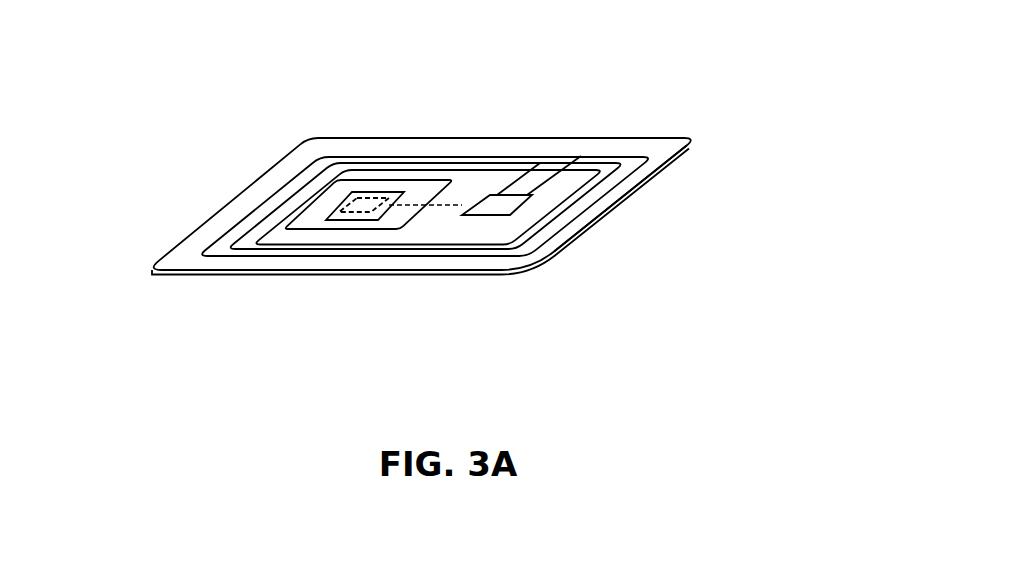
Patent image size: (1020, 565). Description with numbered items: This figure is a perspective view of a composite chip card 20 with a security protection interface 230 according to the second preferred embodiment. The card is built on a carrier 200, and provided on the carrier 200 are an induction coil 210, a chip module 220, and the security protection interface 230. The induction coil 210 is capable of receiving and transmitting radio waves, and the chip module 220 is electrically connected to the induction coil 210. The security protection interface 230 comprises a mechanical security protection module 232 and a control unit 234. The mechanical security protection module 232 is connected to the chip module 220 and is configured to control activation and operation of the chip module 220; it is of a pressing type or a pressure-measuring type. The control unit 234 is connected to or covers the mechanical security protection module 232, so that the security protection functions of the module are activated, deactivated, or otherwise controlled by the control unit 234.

The composite chip card 20 is at (715, 80).
The carrier 200 is at (254, 197).
The induction coil 210 is at (593, 220).
The chip module 220 is at (485, 216).
The security protection interface 230 is at (405, 180).
The mechanical security protection module 232 is at (347, 212).
The control unit 234 is at (367, 222).